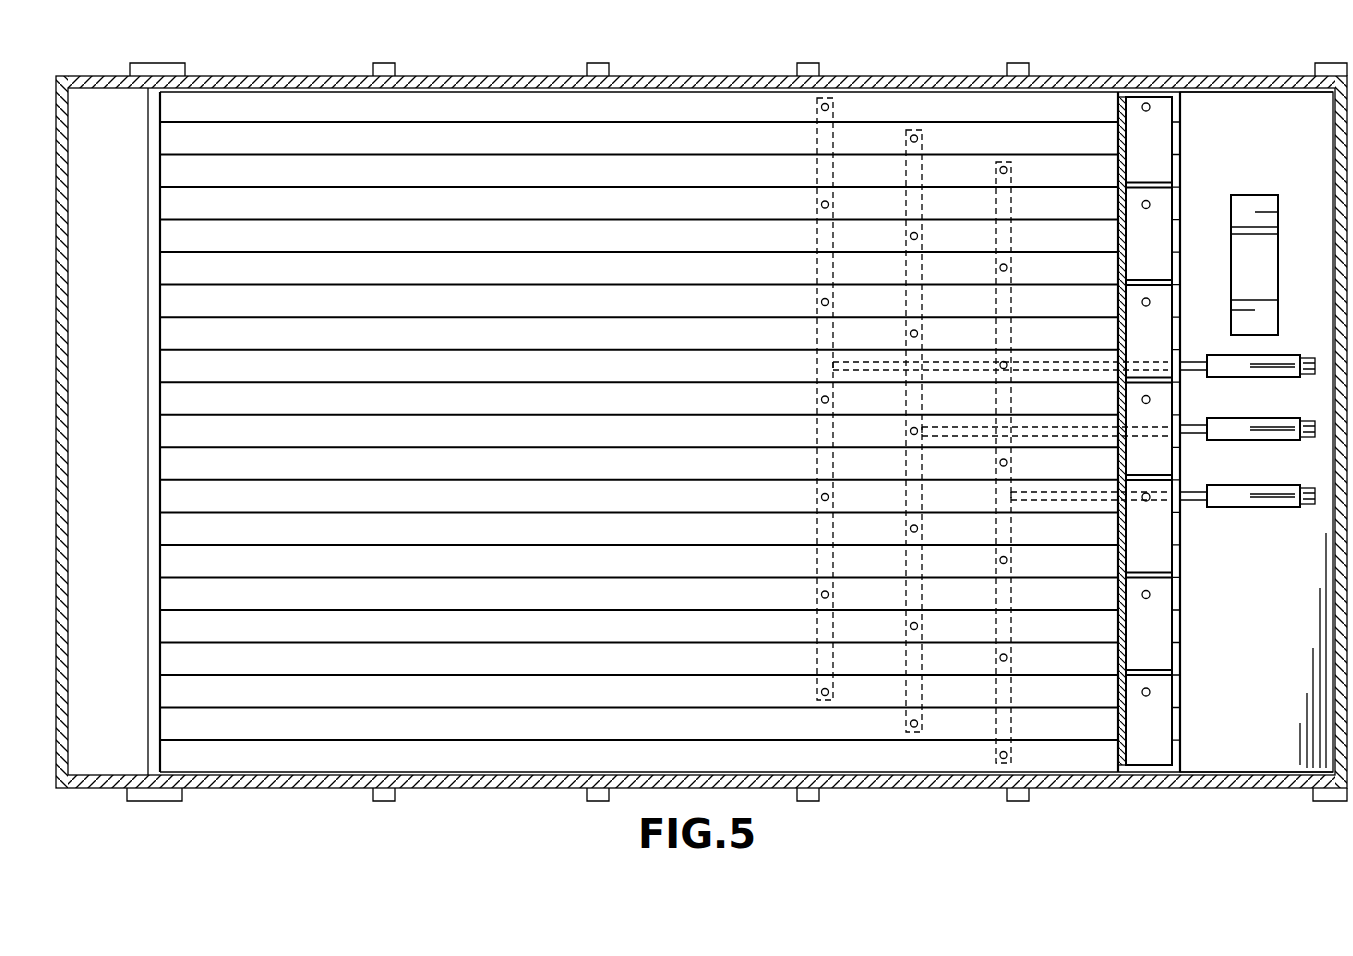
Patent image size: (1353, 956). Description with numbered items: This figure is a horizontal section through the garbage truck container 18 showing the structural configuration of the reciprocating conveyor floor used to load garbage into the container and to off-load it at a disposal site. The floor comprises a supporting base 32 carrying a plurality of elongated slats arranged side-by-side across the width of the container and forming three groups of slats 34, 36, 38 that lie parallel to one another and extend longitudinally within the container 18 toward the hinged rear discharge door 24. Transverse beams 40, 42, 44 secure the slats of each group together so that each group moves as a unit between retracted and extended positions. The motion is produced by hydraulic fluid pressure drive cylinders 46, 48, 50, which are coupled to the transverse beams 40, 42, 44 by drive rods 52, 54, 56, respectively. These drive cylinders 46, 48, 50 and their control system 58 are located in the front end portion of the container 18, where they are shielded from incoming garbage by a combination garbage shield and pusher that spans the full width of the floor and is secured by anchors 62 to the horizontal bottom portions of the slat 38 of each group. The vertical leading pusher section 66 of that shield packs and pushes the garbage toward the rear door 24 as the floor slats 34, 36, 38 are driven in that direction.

The container 18 is at (500, 76).
The rear discharge door 24 is at (68, 290).
The supporting base 32 is at (1248, 754).
The slat 34 is at (165, 170).
The slat 36 is at (165, 138).
The slat 38 is at (165, 105).
The transverse beam 40 is at (993, 233).
The transverse beam 42 is at (905, 199).
The transverse beam 44 is at (815, 168).
The hydraulic drive cylinder 46 is at (1258, 510).
The hydraulic drive cylinder 48 is at (1258, 443).
The hydraulic drive cylinder 50 is at (1258, 380).
The drive rod 52 is at (1060, 505).
The drive rod 54 is at (955, 440).
The drive rod 56 is at (867, 378).
The control system 58 is at (1253, 195).
The anchor 62 is at (1150, 107).
The vertical leading pusher section 66 is at (1118, 722).